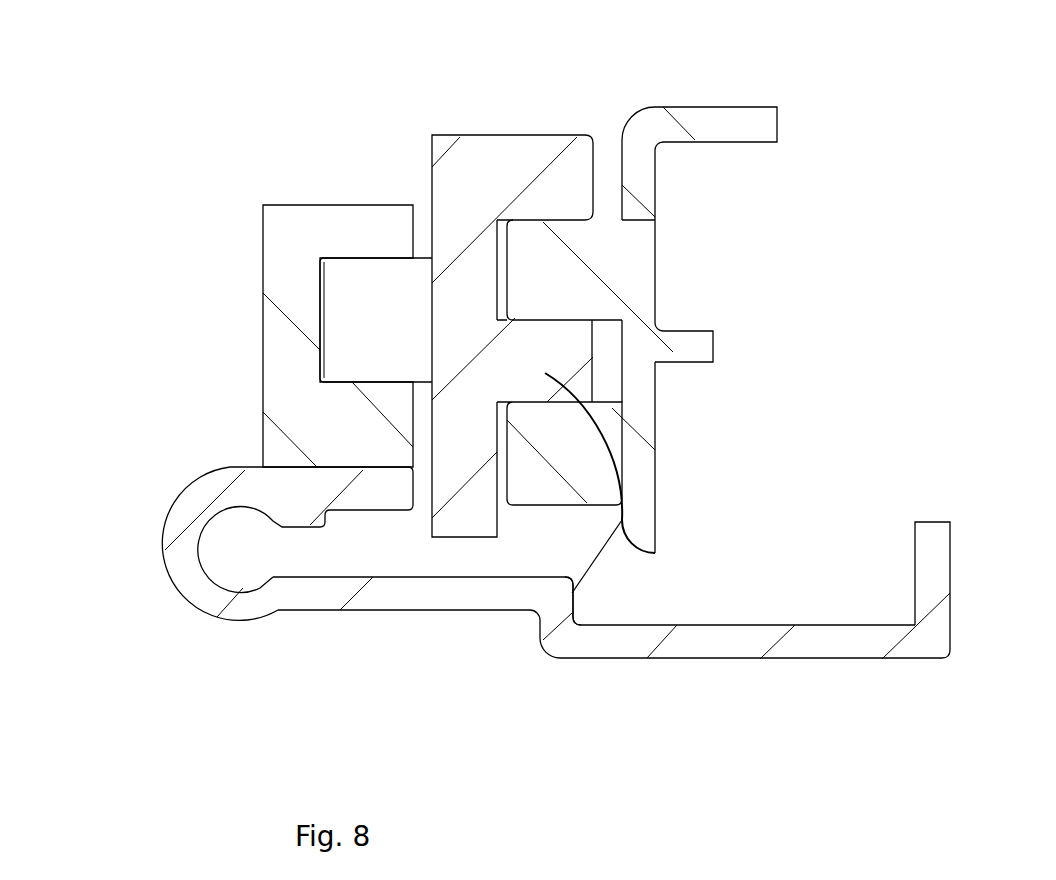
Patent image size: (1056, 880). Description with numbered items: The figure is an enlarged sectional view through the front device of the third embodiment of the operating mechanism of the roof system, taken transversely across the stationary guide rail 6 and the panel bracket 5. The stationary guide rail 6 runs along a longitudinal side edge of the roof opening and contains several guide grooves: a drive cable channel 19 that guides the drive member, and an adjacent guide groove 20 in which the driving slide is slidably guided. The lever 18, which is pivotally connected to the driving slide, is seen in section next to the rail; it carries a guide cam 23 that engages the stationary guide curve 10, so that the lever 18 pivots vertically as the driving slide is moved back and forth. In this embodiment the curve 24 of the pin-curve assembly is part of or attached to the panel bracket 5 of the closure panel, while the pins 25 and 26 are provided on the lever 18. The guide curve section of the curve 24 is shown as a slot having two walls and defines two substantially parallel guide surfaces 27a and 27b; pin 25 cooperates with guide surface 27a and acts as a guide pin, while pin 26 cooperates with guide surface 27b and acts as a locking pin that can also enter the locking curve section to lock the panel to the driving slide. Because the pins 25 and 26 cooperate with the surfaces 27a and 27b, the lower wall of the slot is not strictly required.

The panel bracket 5 is at (740, 127).
The stationary guide rail 6 is at (952, 666).
The stationary guide curve 10 is at (330, 262).
The lever 18 is at (466, 150).
The drive cable channel 19 is at (228, 550).
The guide groove 20 is at (350, 543).
The guide cam 23 is at (365, 288).
The curve 24 is at (630, 318).
The pin 25 is at (565, 600).
The pin 26 is at (555, 178).
The guide surface 27a is at (602, 405).
The guide surface 27b is at (600, 218).